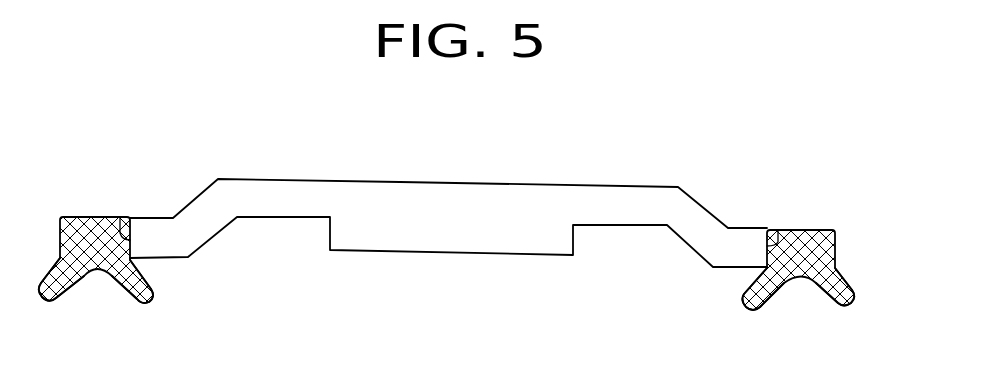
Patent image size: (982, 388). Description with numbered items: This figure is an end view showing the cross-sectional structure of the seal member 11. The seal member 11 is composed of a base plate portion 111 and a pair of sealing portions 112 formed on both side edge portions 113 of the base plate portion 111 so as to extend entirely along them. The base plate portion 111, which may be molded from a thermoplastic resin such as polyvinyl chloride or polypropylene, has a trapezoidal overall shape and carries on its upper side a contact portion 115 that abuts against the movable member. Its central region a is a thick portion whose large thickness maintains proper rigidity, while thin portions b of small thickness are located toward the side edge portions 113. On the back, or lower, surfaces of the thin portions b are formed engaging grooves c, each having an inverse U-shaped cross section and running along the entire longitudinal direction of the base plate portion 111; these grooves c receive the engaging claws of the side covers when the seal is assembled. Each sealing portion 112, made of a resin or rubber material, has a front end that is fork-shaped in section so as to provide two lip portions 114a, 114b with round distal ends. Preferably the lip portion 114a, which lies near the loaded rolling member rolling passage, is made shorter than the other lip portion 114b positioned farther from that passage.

The seal member 11 is at (270, 103).
The base plate portion 111 is at (448, 200).
The sealing portion 112 is at (82, 217).
The side edge portion 113 is at (120, 217).
The lip portion 114a is at (50, 297).
The lip portion 114b is at (148, 300).
The contact portion 115 is at (373, 185).
The central portion a is at (443, 237).
The thin portion b is at (293, 190).
The engaging groove c is at (272, 220).